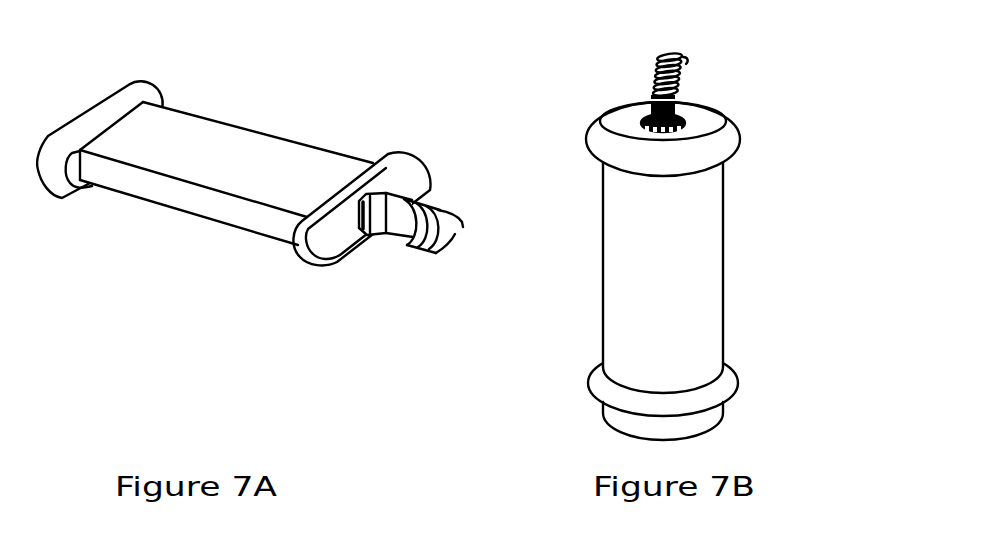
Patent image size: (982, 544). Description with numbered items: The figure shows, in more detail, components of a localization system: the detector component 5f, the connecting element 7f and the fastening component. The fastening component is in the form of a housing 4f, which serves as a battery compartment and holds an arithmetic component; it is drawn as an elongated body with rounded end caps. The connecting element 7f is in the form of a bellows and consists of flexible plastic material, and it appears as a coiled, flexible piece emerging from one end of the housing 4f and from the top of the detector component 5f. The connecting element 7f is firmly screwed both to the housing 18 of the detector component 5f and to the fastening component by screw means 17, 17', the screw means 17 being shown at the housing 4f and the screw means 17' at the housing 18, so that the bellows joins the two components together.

In FIG. 7A, the housing 4f is at (230, 143).
In FIG. 7A, the connecting element 7f is at (427, 207).
In FIG. 7B, the connecting element 7f is at (650, 77).
In FIG. 7A, the screw means 17 is at (360, 268).
In FIG. 7B, the screw means 17' is at (735, 107).
In FIG. 7B, the housing 18 is at (720, 268).
In FIG. 7B, the detector component 5f is at (655, 271).